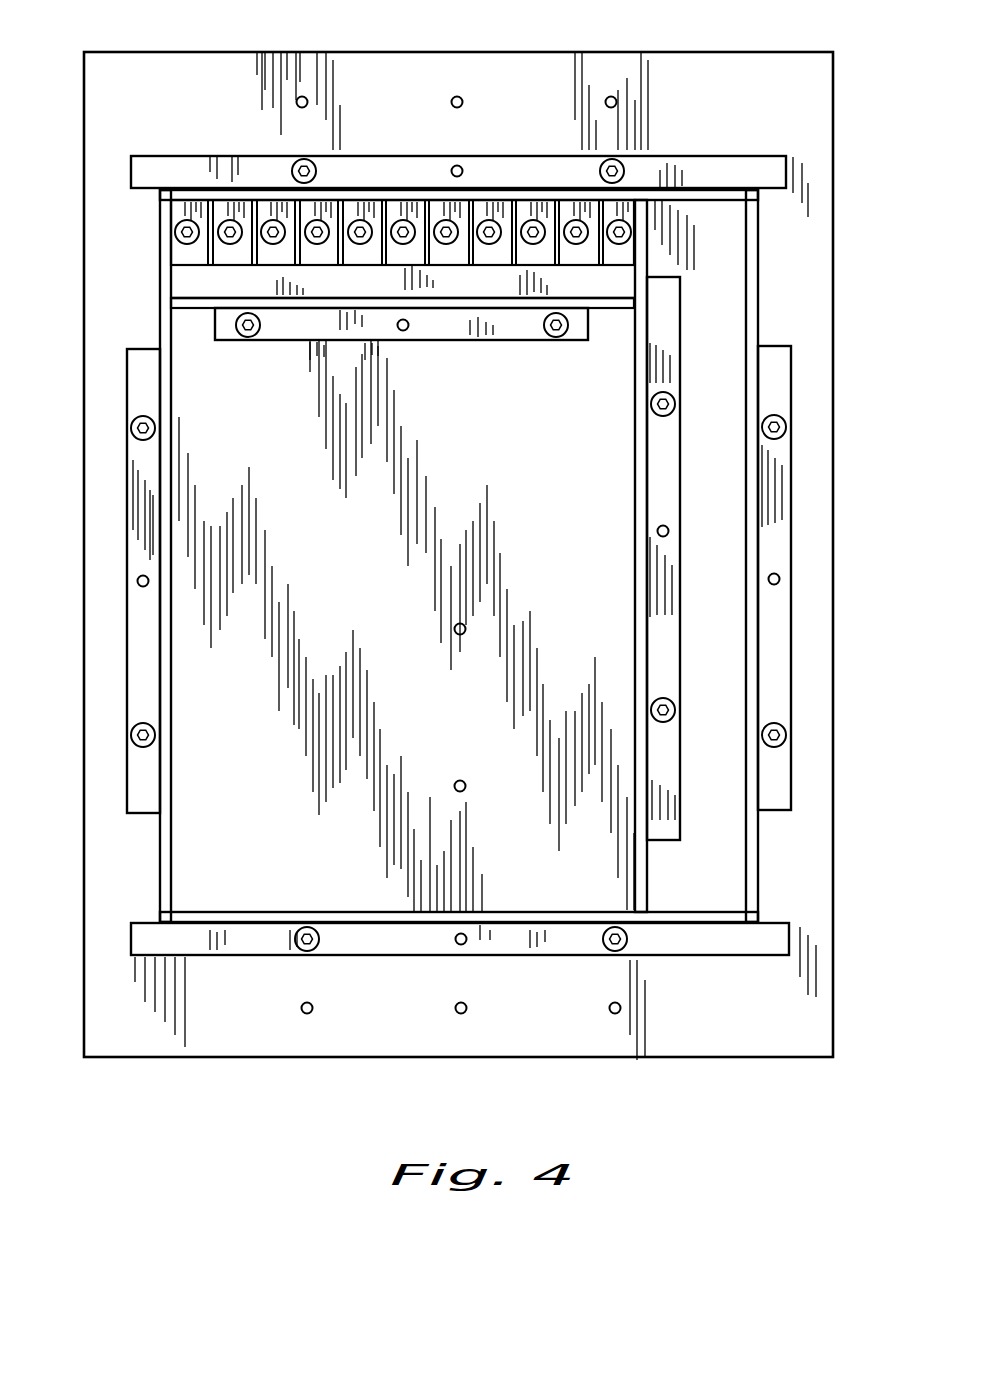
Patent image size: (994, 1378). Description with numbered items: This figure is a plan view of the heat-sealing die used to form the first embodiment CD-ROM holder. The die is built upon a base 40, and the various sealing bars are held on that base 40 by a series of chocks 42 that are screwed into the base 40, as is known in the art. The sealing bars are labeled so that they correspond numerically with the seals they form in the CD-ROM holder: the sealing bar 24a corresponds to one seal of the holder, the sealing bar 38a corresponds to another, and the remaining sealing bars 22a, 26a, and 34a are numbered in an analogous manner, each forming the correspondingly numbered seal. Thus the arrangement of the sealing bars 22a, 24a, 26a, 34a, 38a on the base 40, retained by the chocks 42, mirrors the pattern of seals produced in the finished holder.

The base 40 is at (728, 90).
The sealing bar 22a is at (188, 192).
The sealing bar 24a is at (640, 860).
The sealing bar 26a is at (182, 300).
The sealing bar 34a is at (338, 203).
The sealing bar 38a is at (183, 278).
The chocks 42 is at (146, 173).